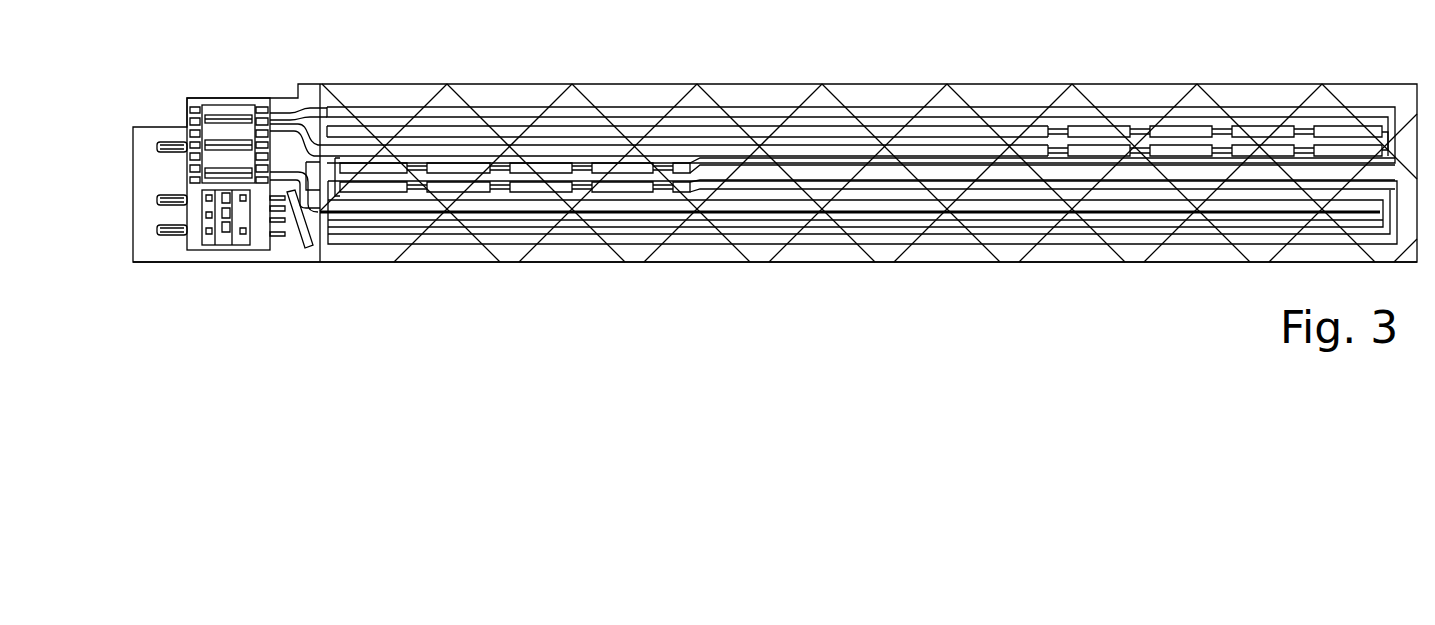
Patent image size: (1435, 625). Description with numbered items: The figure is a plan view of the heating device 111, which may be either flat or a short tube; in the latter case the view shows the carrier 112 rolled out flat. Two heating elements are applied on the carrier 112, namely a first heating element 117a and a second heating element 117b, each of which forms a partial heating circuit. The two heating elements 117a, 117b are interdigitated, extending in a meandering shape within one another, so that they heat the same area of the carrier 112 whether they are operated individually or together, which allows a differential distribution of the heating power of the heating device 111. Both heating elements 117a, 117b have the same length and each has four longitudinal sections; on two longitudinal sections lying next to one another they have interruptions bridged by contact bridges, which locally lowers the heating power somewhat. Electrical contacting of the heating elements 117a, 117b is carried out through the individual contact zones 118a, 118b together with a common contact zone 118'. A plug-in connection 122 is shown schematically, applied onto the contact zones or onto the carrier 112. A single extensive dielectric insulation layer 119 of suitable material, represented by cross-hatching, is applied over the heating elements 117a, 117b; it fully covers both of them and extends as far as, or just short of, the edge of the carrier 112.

The heating device 111 is at (758, 244).
The carrier 112 is at (1060, 250).
The first heating element 117a is at (884, 238).
The second heating element 117b is at (777, 218).
The individual contact zone 118a is at (293, 117).
The individual contact zone 118b is at (295, 148).
The common contact zone 118' is at (831, 247).
The dielectric insulation layer 119 is at (445, 277).
The plug-in connection 122 is at (154, 94).